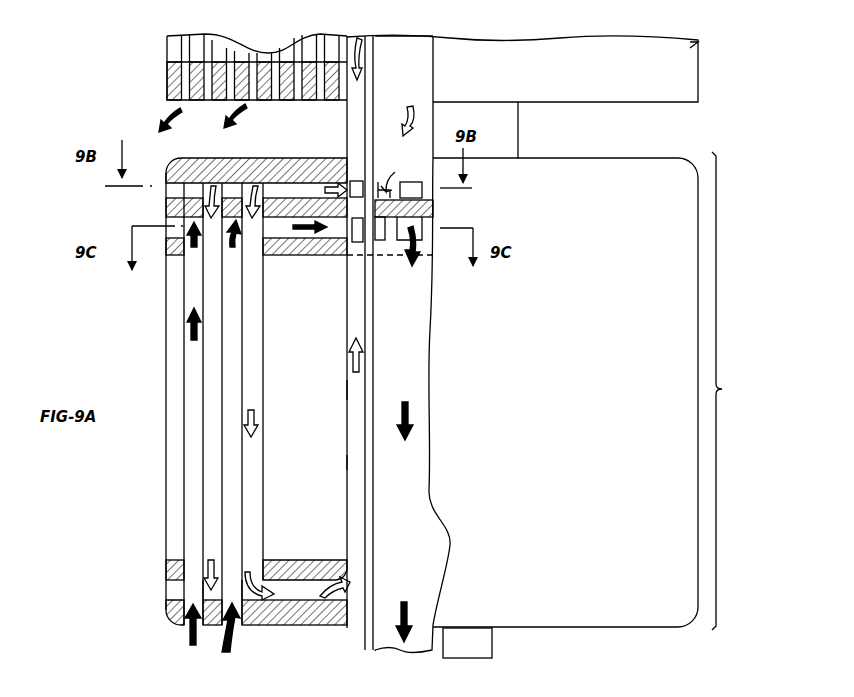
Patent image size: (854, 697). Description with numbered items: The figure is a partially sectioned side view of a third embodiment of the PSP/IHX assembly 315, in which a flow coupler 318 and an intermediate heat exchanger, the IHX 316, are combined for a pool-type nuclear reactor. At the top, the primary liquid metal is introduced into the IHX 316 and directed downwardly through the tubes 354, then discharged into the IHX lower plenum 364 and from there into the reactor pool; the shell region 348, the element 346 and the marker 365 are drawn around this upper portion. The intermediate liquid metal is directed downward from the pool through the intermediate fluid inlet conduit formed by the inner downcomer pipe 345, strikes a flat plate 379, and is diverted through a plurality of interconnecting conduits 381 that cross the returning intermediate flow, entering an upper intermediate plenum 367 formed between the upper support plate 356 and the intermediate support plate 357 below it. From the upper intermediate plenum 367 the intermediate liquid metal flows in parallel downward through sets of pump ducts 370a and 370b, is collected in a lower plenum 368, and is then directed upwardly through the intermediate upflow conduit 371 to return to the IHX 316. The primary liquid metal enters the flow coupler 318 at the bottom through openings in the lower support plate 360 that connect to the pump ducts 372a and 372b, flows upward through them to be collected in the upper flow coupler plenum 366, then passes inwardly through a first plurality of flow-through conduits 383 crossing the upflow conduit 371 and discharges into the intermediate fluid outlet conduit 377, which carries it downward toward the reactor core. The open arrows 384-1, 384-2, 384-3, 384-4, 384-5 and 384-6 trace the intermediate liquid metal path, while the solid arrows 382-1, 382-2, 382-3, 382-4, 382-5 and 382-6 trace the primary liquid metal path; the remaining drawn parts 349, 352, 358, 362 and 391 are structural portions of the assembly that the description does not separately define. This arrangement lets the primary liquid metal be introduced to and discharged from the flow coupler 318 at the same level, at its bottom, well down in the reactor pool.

The PSP/IHX assembly 315 is at (150, 45).
The IHX 316 is at (702, 55).
The flow coupler 318 is at (598, 391).
The inner downcomer pipe 345 is at (377, 82).
The tube 346 is at (370, 95).
The top wall 348 is at (700, 88).
The wall 349 is at (166, 490).
The fin 352 is at (282, 100).
The tubes 354 is at (205, 100).
The upper support plate 356 is at (252, 160).
The intermediate support plate 357 is at (166, 213).
The chamber 358 is at (281, 381).
The lower support plate 360 is at (258, 628).
The block 362 is at (278, 565).
The IHX lower plenum 364 is at (624, 142).
The top 365 is at (410, 48).
The upper flow coupler plenum 366 is at (280, 258).
The upper intermediate plenum 367 is at (168, 180).
The lower plenum 368 is at (292, 593).
The pump duct 370a is at (212, 375).
The pump duct 370b is at (255, 325).
The intermediate upflow conduit 371 is at (347, 398).
The pump duct 372a is at (192, 355).
The pump duct 372b is at (235, 355).
The intermediate fluid outlet conduit 377 is at (378, 632).
The flat plate 379 is at (435, 207).
The interconnecting conduits 381 is at (368, 190).
The flow arrow 382-1 is at (162, 112).
The flow arrow 382-2 is at (185, 634).
The flow arrow 382-3 is at (192, 328).
The flow arrow 382-4 is at (230, 245).
The flow arrow 382-5 is at (432, 262).
The flow arrow 382-6 is at (412, 605).
The flow-through conduits 383 is at (362, 242).
The flow arrow 384-1 is at (417, 118).
The flow arrow 384-2 is at (335, 188).
The flow arrow 384-3 is at (210, 183).
The flow arrow 384-4 is at (260, 422).
The flow arrow 384-5 is at (340, 590).
The flow arrow 384-6 is at (302, 55).
The wall 391 is at (347, 462).